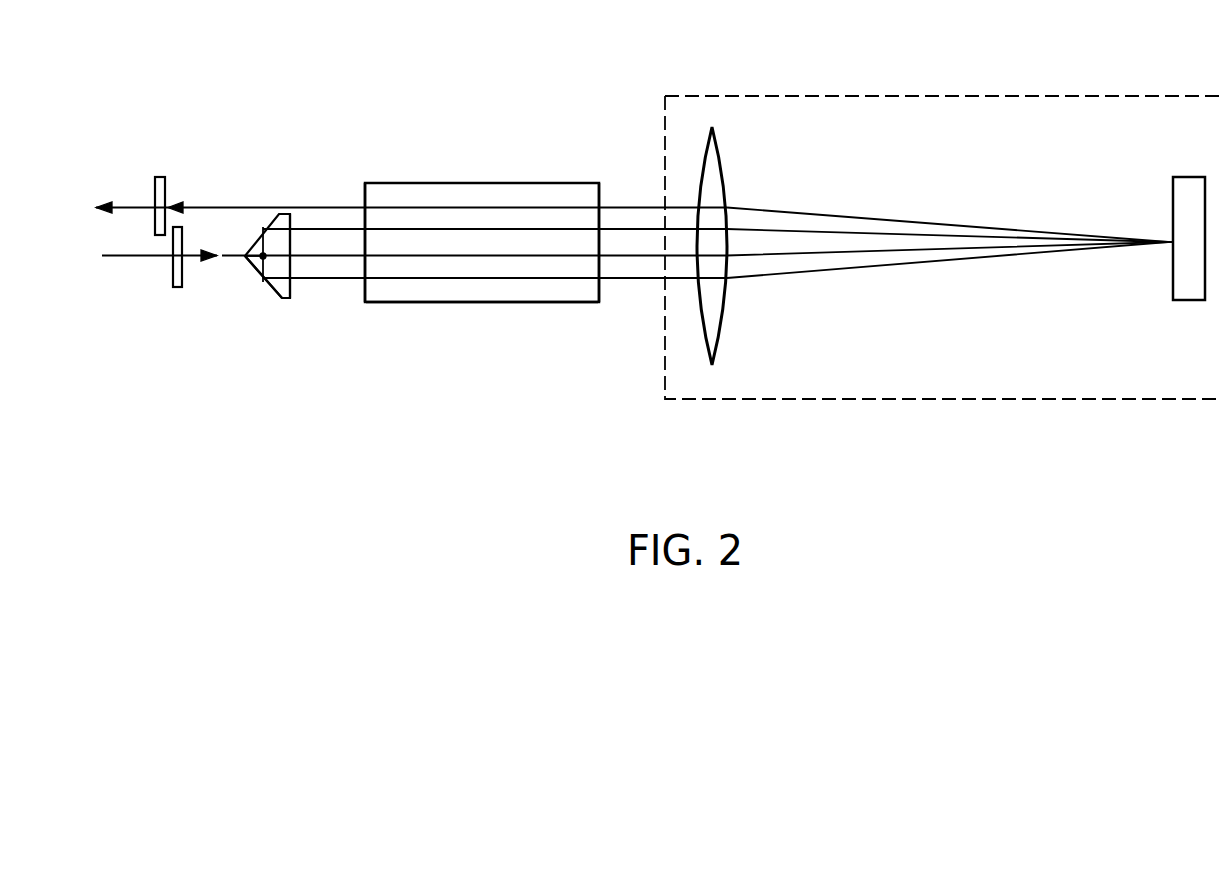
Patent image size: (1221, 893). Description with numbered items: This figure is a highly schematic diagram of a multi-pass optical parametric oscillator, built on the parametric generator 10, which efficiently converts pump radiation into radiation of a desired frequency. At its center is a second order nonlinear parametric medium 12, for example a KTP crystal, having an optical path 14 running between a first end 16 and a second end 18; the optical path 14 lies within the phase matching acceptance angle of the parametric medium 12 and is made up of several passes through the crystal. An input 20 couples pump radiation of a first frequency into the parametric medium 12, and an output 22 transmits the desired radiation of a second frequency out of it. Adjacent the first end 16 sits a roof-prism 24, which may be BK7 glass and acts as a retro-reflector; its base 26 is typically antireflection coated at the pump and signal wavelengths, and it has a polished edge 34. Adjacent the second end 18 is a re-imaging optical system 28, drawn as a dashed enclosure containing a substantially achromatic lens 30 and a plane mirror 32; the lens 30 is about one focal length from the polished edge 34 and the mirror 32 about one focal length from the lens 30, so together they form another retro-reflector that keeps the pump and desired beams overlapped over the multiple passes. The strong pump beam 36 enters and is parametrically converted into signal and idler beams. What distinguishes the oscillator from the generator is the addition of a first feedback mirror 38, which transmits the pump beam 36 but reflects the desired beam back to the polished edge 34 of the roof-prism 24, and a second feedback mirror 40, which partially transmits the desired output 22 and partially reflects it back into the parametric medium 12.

The parametric generator 10 is at (657, 70).
The second order nonlinear parametric medium 12 is at (425, 302).
The optical path 14 is at (513, 255).
The first end 16 is at (363, 296).
The second end 18 is at (601, 290).
The input 20 is at (247, 254).
The output 22 is at (339, 205).
The roof-prism 24 is at (285, 300).
The base 26 is at (294, 240).
The re-imaging optical system 28 is at (1063, 94).
The achromatic lens 30 is at (727, 297).
The plane mirror 32 is at (1177, 263).
The polished edge 34 is at (243, 257).
The pump beam 36 is at (118, 262).
The first feedback mirror 38 is at (179, 290).
The second feedback mirror 40 is at (167, 189).